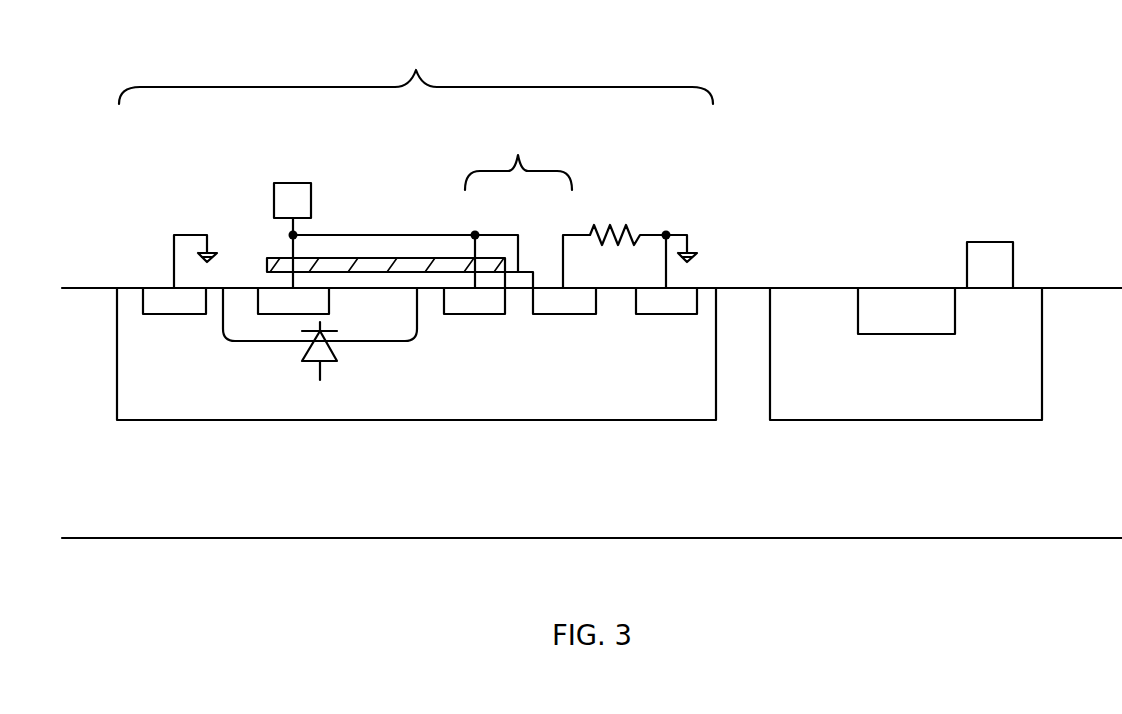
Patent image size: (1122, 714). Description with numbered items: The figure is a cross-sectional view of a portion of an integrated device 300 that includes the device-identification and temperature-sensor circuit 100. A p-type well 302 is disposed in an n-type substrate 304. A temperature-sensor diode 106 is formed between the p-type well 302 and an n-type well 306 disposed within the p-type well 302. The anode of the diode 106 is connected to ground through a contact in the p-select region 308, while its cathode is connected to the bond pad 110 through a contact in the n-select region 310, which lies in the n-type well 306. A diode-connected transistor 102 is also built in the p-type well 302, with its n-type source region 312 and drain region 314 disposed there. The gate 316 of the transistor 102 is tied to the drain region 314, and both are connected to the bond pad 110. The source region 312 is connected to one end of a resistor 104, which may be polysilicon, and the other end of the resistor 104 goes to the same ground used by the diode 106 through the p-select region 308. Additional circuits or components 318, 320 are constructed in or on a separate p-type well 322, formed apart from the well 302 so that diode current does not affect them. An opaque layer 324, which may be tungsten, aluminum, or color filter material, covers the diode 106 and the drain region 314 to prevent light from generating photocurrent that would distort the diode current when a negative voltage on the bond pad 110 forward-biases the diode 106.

The device-identification and temperature-sensor circuit 100 is at (416, 75).
The diode-connected transistor 102 is at (518, 159).
The resistor 104 is at (645, 210).
The temperature-sensor diode 106 is at (298, 380).
The bond pad 110 is at (297, 193).
The integrated device 300 is at (872, 52).
The well 302 is at (608, 400).
The substrate 304 is at (907, 515).
The n-type well 306 is at (375, 321).
The p-select region 308 is at (167, 303).
The n-select region 310 is at (277, 298).
The source region 312 is at (553, 305).
The drain region 314 is at (468, 305).
The gate 316 is at (540, 252).
The additional circuit or component 318 is at (910, 317).
The additional circuit or component 320 is at (987, 253).
The well 322 is at (1013, 398).
The opaque layer 324 is at (380, 262).